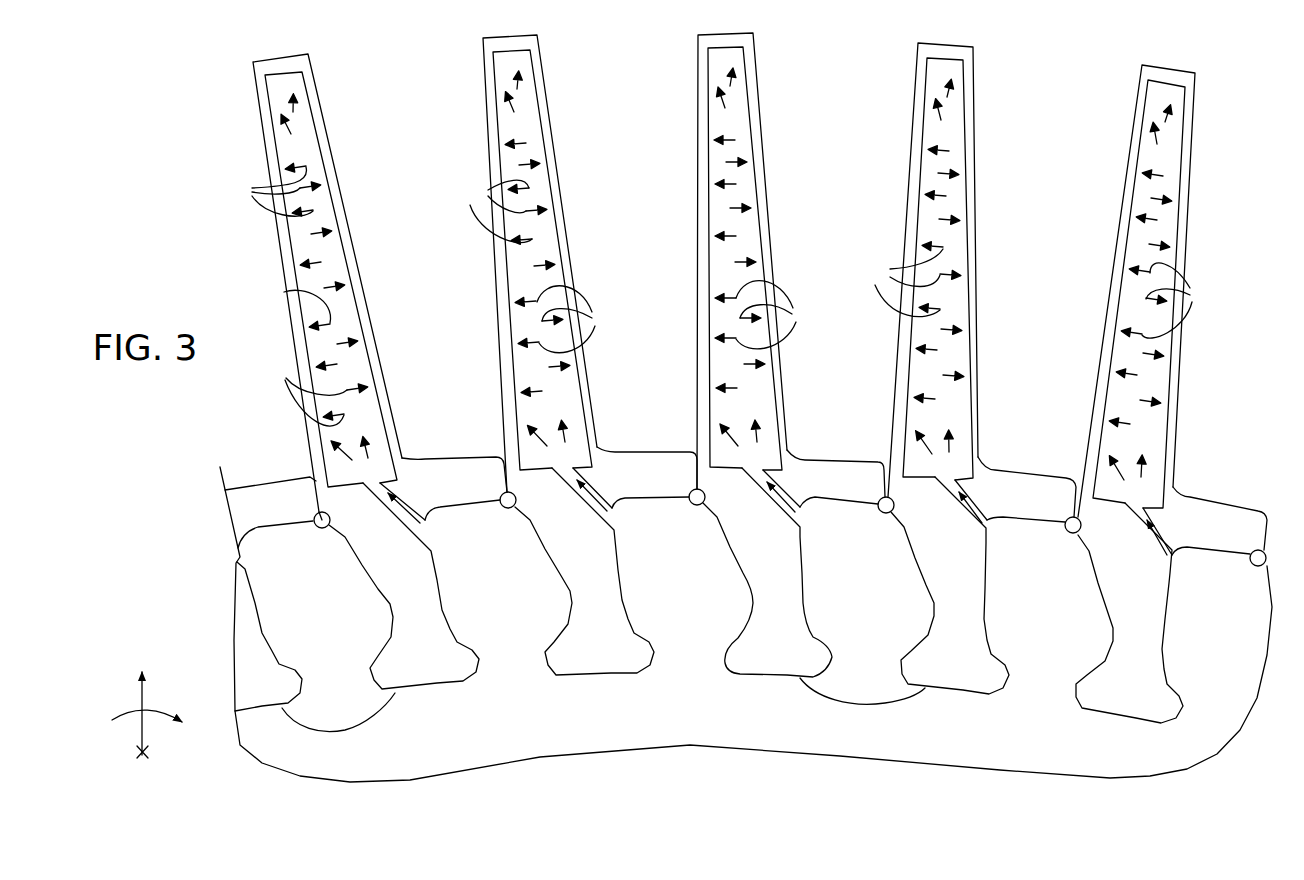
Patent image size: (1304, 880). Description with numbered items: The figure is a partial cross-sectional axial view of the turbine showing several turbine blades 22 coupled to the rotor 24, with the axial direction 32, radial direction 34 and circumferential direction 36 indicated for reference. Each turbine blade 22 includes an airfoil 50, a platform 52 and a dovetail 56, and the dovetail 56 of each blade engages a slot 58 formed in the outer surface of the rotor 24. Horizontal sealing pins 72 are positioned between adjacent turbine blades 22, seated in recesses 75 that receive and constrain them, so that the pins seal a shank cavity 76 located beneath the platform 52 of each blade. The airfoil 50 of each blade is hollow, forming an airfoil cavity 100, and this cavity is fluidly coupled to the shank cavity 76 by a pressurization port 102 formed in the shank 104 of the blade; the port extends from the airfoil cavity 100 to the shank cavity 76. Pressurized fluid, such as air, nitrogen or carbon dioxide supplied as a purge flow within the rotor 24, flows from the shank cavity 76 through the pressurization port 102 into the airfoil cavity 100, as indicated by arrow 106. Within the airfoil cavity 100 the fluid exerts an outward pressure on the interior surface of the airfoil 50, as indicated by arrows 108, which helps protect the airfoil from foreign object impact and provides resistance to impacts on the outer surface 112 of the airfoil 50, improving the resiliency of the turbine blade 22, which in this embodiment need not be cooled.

The turbine blade 22 is at (470, 66).
The rotor 24 is at (746, 624).
The axial direction 32 is at (143, 758).
The radial direction 34 is at (140, 697).
The circumferential direction 36 is at (153, 712).
The blade portion 50 is at (724, 275).
The platform 52 is at (455, 459).
The mounting insert portion 56 is at (732, 595).
The slot 58 is at (305, 723).
The horizontal sealing pin 72 is at (321, 530).
The recess 75 is at (328, 514).
The shank cavity 76 is at (283, 618).
The airfoil cavity 100 is at (520, 282).
The pressurization port 102 is at (405, 498).
The shank 104 is at (392, 582).
The arrow 106 is at (414, 511).
The arrows 108 is at (720, 296).
The outer surface 112 is at (345, 195).